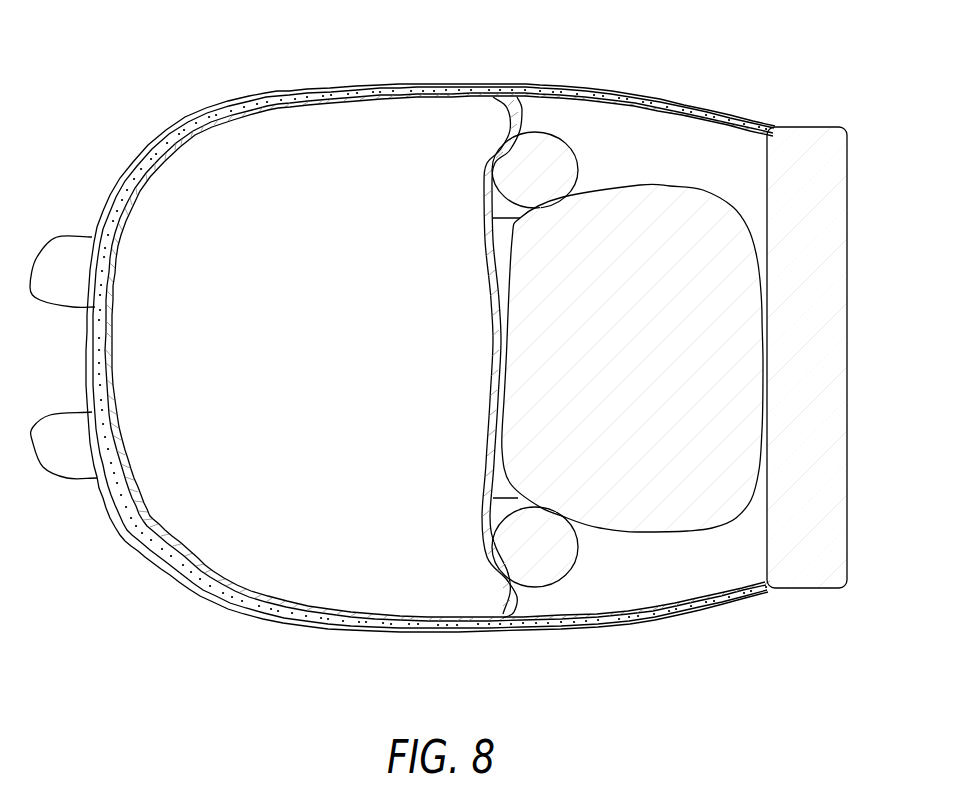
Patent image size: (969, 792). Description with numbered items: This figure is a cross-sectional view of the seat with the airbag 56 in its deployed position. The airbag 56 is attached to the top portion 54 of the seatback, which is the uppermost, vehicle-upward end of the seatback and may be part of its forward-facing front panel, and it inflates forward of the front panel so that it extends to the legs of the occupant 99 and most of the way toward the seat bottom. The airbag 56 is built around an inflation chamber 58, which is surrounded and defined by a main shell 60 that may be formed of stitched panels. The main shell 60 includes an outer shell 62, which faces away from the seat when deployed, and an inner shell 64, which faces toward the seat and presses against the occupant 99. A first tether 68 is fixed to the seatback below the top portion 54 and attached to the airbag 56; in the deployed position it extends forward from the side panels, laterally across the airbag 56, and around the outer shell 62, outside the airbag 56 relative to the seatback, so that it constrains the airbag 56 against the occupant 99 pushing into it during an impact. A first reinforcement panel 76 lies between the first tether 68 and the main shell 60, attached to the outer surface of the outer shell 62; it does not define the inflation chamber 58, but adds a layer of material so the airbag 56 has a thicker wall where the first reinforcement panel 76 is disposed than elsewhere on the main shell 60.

The top portion 54 is at (847, 193).
The airbag 56 is at (182, 593).
The inflation chamber 58 is at (207, 607).
The main shell 60 is at (228, 607).
The outer shell 62 is at (117, 450).
The inner shell 64 is at (490, 412).
The first tether 68 is at (573, 85).
The first reinforcement panel 76 is at (190, 120).
The occupant 99 is at (638, 187).